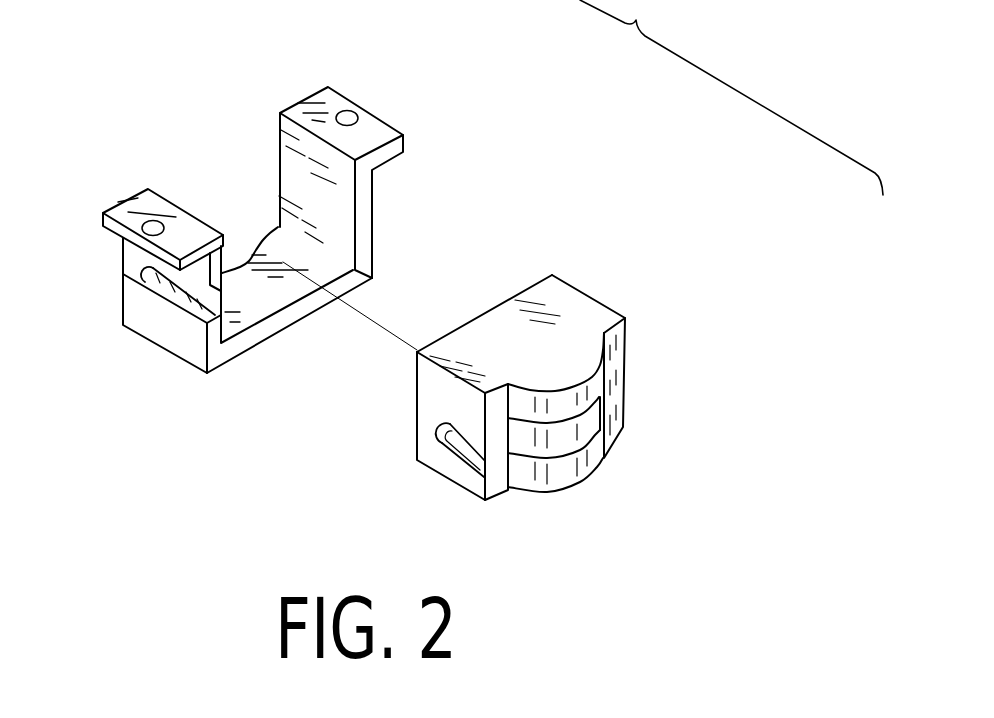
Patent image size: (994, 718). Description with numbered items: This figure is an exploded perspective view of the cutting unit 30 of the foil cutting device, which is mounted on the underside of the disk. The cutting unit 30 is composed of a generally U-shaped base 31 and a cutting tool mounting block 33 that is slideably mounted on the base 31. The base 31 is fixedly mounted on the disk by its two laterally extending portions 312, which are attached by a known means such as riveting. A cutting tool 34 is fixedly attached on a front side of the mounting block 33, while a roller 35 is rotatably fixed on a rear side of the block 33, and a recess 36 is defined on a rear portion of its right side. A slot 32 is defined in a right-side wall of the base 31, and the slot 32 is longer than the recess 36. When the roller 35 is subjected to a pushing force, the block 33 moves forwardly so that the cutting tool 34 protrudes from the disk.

The cutting unit 30 is at (532, 140).
The base 31 is at (180, 364).
The laterally extending portions 312 is at (163, 207).
The slot 32 is at (150, 281).
The cutting tool mounting block 33 is at (614, 312).
The cutting tool 34 is at (502, 290).
The roller 35 is at (624, 428).
The recess 36 is at (440, 437).